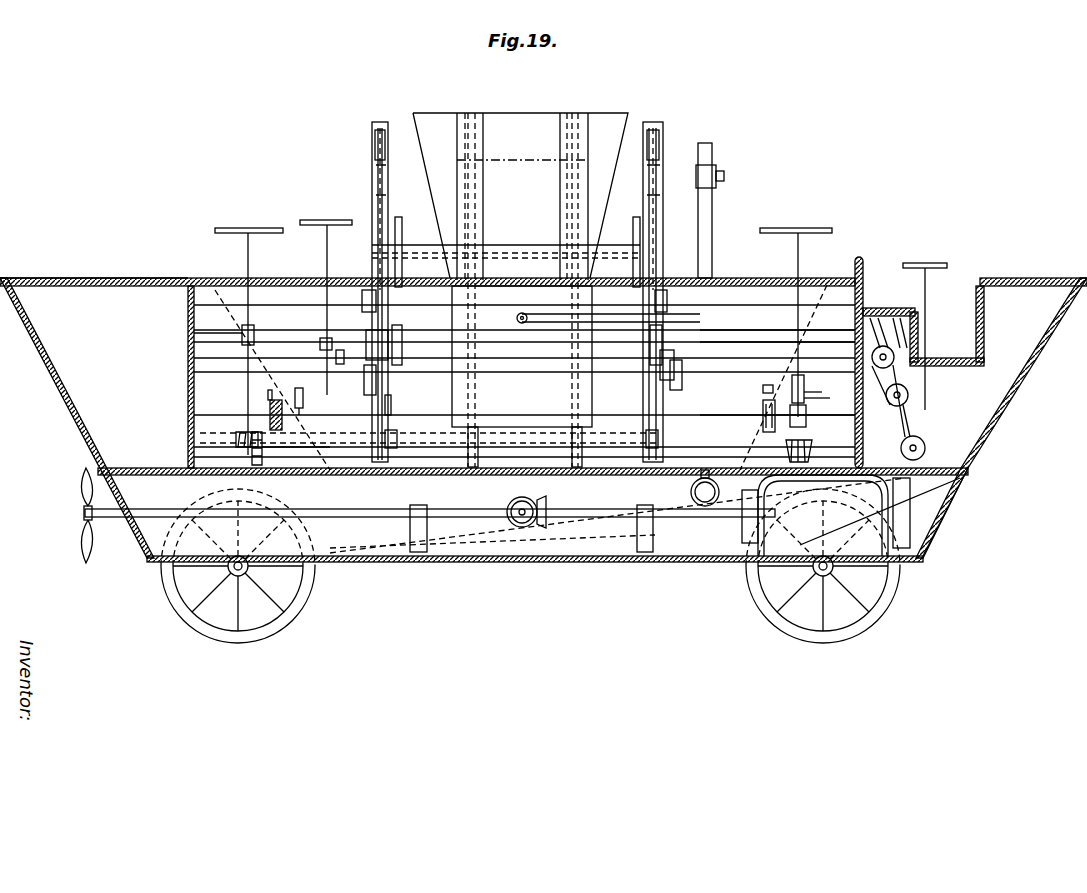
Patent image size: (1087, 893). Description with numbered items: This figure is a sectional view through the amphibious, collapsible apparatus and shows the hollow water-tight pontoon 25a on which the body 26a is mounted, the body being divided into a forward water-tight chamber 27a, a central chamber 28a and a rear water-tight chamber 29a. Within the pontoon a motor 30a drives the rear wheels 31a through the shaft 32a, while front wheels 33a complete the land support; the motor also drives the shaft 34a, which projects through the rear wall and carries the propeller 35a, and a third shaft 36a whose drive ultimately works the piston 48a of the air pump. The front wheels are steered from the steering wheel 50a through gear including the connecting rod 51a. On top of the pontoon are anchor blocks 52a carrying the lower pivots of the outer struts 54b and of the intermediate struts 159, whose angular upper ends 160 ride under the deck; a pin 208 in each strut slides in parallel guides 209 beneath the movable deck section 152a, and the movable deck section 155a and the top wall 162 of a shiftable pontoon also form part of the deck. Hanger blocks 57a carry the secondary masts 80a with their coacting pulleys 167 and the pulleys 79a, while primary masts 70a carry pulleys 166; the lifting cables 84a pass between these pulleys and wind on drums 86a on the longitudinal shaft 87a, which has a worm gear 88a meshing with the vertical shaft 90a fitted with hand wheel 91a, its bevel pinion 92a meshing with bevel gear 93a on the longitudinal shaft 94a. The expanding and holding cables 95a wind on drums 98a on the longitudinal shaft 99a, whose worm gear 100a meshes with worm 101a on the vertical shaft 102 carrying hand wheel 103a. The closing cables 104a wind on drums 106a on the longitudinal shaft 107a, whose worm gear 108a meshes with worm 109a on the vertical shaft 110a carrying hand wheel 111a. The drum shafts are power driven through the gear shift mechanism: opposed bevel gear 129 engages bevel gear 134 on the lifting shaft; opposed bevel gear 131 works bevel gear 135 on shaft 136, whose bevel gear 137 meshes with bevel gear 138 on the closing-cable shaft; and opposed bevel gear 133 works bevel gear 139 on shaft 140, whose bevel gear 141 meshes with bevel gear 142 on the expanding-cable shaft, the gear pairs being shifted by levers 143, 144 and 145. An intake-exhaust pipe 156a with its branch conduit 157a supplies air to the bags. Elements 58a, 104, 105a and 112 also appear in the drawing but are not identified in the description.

The pontoon 25a is at (355, 560).
The body 26a is at (62, 372).
The forward water-tight chamber 27a is at (1032, 290).
The central chamber 28a is at (288, 290).
The rear water-tight chamber 29a is at (94, 264).
The motor 30a is at (912, 540).
The rear wheels 31a is at (190, 628).
The shaft 32a is at (690, 548).
The front wheels 33a is at (885, 605).
The shaft 34a is at (462, 509).
The propeller 35a is at (82, 545).
The third shaft 36a is at (612, 512).
The piston 48a is at (691, 490).
The steering wheel 50a is at (930, 263).
The connecting rod 51a is at (912, 510).
The anchor blocks 52a is at (652, 430).
The outer struts 54b is at (612, 393).
The hanger blocks 57a is at (667, 300).
The bracket 58a is at (385, 405).
The primary masts 70a is at (650, 205).
The pulleys 79a is at (685, 282).
The secondary masts 80a is at (663, 125).
The lifting cables 84a is at (640, 185).
The drums 86a is at (660, 345).
The longitudinal shaft 87a is at (210, 338).
The worm gear 88a is at (242, 348).
The vertical shaft 90a is at (246, 268).
The hand wheel 91a is at (245, 228).
The bevel pinion 92a is at (236, 438).
The bevel gear 93a is at (252, 460).
The longitudinal shaft 94a is at (308, 448).
The expanding and holding cables 95a is at (680, 345).
The drums 98a is at (682, 385).
The longitudinal shaft 99a is at (300, 362).
The worm gear 100a is at (305, 393).
The worm 101a is at (325, 400).
The vertical shaft 102 is at (325, 242).
The hand wheel 103a is at (315, 210).
The bearing 104 is at (758, 393).
The closing cables 104a is at (263, 389).
The pulley 105a is at (266, 411).
The drums 106a is at (763, 408).
The longitudinal shaft 107a is at (735, 408).
The worm gear 108a is at (810, 445).
The worm 109a is at (806, 408).
The vertical shaft 110a is at (800, 258).
The hand wheel 111a is at (798, 228).
The belt 112 is at (925, 445).
The bevel gear 129 is at (925, 448).
The bevel gear 131 is at (908, 395).
The bevel gear 133 is at (894, 357).
The bevel gear 134 is at (891, 401).
The bevel gear 135 is at (877, 385).
The shaft 136 is at (827, 394).
The bevel gear 137 is at (821, 383).
The bevel gear 138 is at (788, 389).
The bevel gear 139 is at (850, 340).
The shaft 140 is at (777, 344).
The bevel gear 141 is at (338, 356).
The bevel gear 142 is at (320, 345).
The lever 143 is at (907, 325).
The lever 144 is at (900, 320).
The lever 145 is at (880, 318).
The movable deck section 152a is at (543, 118).
The movable deck section 155a is at (720, 172).
The intake-exhaust pipe 156a is at (712, 210).
The branch conduit 157a is at (545, 318).
The intermediate struts 159 is at (560, 396).
The angular upper ends 160 is at (590, 230).
The top wall 162 is at (375, 140).
The pulleys 166 is at (655, 205).
The coacting pulleys 167 is at (660, 152).
The pin 208 is at (590, 245).
The parallel guides 209 is at (570, 156).